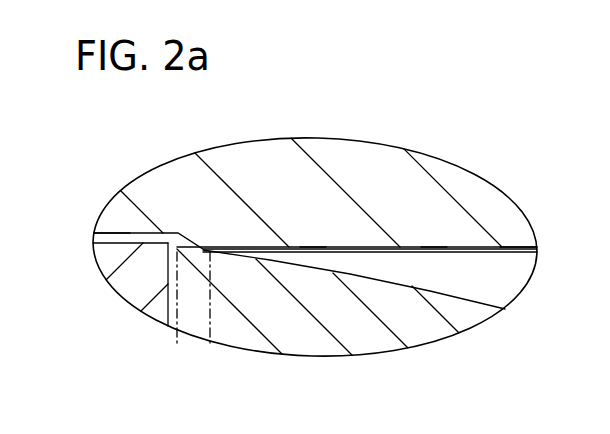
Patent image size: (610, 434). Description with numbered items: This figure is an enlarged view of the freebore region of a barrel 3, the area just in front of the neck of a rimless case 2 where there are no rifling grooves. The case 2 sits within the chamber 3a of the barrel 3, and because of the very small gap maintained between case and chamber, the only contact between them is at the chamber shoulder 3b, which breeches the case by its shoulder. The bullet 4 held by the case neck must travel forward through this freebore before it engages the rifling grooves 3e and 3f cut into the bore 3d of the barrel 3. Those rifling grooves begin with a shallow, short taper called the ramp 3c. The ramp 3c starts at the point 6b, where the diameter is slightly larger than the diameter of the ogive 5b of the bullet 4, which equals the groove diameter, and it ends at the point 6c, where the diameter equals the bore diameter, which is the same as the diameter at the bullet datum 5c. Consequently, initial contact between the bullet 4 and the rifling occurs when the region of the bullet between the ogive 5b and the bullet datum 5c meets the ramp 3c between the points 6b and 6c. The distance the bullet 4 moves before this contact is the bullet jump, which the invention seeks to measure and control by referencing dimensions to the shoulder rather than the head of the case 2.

The rimless case 2 is at (122, 323).
The barrel 3 is at (487, 197).
The chamber 3a is at (91, 178).
The chamber shoulder 3b is at (596, 424).
The ramp 3c is at (378, 256).
The bore 3d is at (505, 275).
The rifling groove 3e is at (555, 213).
The rifling groove 3f is at (603, 300).
The bullet 4 is at (312, 338).
The ogive 5b is at (177, 345).
The bullet datum 5c is at (210, 345).
The ramp start 6b is at (313, 247).
The ramp end 6c is at (434, 247).